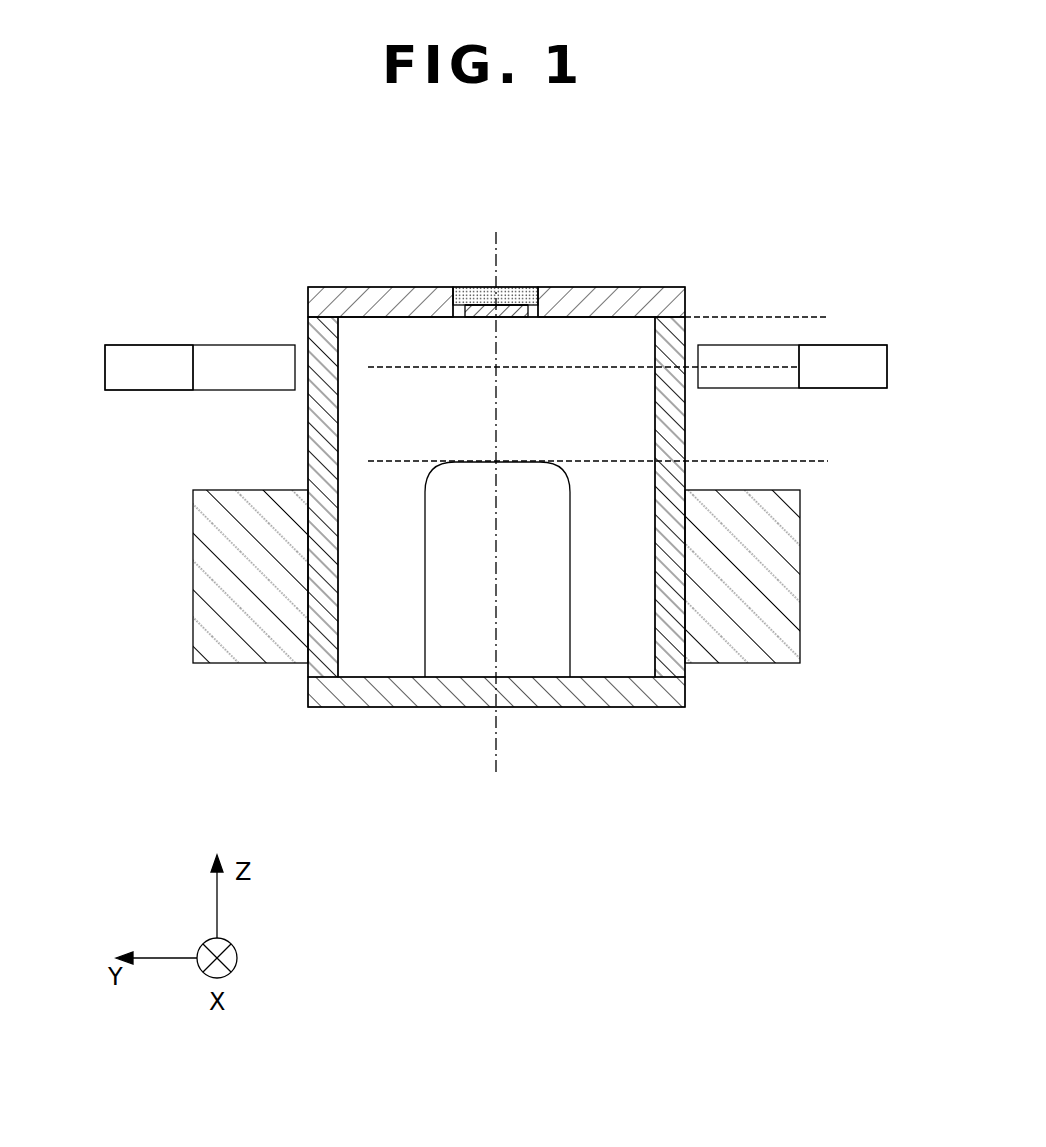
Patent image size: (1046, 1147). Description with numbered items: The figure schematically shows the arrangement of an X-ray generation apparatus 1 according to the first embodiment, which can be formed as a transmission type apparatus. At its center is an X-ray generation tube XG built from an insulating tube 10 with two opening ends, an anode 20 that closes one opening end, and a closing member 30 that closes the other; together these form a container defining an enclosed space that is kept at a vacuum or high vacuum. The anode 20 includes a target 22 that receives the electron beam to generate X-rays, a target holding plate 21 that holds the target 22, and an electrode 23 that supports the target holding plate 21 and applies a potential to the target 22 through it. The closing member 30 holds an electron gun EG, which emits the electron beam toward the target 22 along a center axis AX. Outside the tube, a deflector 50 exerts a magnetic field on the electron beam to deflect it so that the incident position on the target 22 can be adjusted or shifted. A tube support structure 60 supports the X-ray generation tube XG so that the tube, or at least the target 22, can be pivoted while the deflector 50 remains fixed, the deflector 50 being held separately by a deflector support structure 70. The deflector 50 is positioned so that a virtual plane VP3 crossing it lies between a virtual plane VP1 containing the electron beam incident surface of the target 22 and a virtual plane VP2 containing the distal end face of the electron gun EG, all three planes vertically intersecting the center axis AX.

The X-ray generation apparatus 1 is at (400, 867).
The insulating tube 10 is at (462, 476).
The anode 20 is at (496, 251).
The target holding plate 21 is at (517, 298).
The target 22 is at (525, 313).
The electrode 23 is at (594, 288).
The closing member 30 is at (605, 708).
The deflector 50 is at (241, 344).
The tube support structure 60 is at (193, 543).
The deflector support structure 70 is at (105, 362).
The X-ray generation tube XG is at (382, 240).
The electron gun EG is at (570, 520).
The center axis AX is at (498, 760).
The virtual plane VP1 is at (800, 316).
The virtual plane VP2 is at (812, 460).
The virtual plane VP3 is at (745, 368).